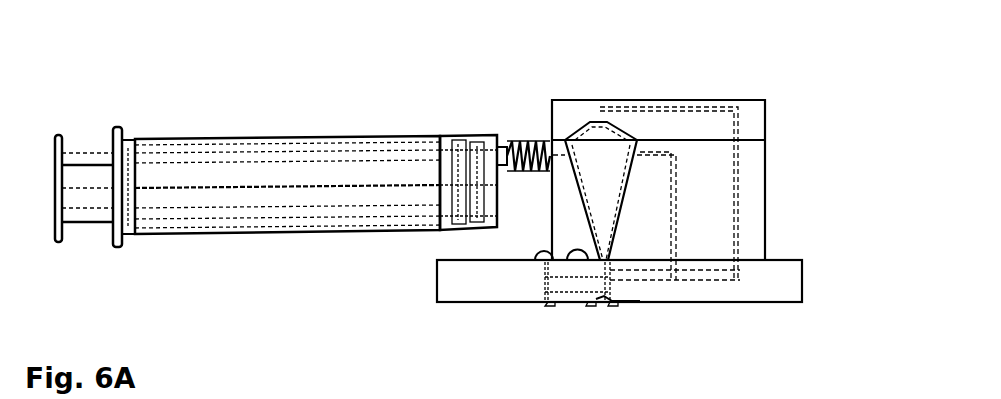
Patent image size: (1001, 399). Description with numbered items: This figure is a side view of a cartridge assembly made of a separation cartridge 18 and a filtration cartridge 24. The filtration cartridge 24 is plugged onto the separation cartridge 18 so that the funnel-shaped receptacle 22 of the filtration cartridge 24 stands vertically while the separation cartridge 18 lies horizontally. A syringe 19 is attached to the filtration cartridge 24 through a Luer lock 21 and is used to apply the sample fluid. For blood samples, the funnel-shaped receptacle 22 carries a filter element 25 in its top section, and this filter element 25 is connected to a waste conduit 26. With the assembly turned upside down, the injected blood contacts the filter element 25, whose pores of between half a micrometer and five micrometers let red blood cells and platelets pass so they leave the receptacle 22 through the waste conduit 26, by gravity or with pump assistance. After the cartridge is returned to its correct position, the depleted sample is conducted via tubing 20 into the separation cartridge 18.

The separation cartridge 18 is at (802, 280).
The syringe 19 is at (208, 135).
The tubing 20 is at (598, 290).
The Luer lock 21 is at (537, 165).
The funnel-shaped receptacle 22 is at (620, 219).
The filtration cartridge 24 is at (765, 108).
The filter element 25 is at (595, 126).
The waste conduit 26 is at (740, 186).